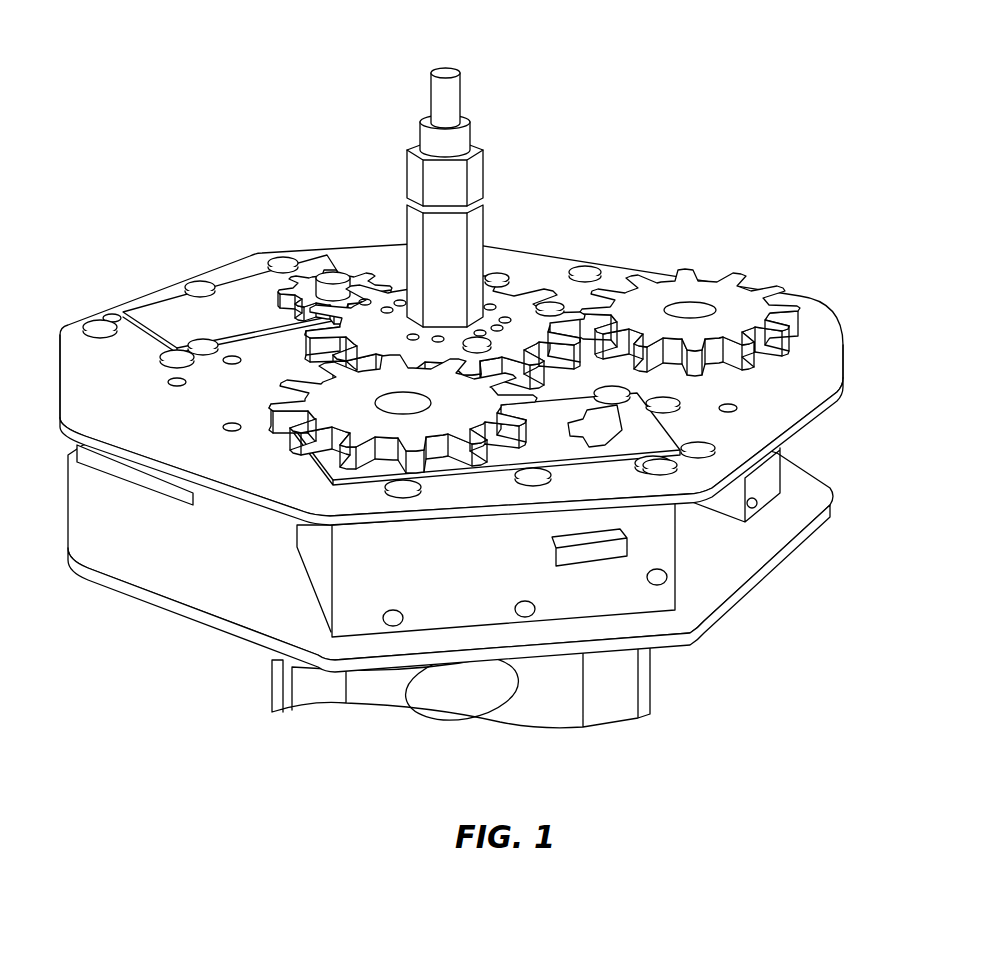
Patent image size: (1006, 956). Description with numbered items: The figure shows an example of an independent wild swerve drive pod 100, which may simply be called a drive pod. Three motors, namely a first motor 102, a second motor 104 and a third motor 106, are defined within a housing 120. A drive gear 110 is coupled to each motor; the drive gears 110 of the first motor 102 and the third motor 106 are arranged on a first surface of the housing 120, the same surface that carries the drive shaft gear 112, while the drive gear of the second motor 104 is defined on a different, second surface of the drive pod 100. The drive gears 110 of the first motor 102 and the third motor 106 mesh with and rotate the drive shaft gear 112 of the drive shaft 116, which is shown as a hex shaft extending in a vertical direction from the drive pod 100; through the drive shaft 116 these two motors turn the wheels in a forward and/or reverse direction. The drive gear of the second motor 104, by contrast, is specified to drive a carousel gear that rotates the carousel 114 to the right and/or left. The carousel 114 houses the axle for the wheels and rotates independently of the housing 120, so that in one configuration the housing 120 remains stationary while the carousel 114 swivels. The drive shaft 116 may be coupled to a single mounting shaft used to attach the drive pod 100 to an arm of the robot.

The independent wild swerve drive pod 100 is at (525, 398).
The first motor 102 is at (770, 468).
The second motor 104 is at (170, 308).
The third motor 106 is at (347, 585).
The drive gear 110 is at (747, 287).
The drive shaft gear 112 is at (513, 290).
The carousel 114 is at (625, 687).
The drive shaft 116 is at (478, 180).
The housing 120 is at (820, 357).